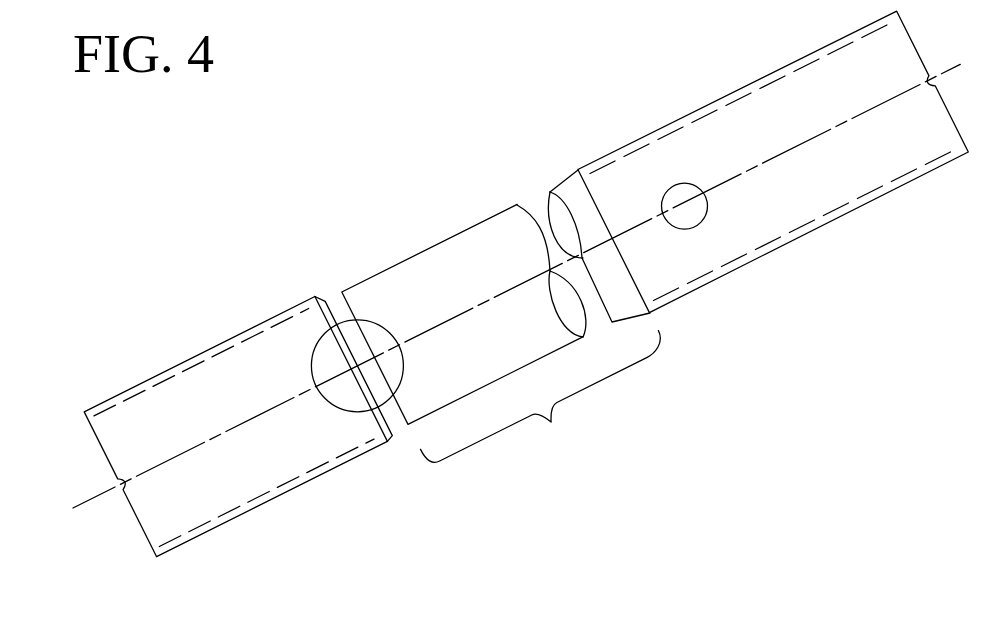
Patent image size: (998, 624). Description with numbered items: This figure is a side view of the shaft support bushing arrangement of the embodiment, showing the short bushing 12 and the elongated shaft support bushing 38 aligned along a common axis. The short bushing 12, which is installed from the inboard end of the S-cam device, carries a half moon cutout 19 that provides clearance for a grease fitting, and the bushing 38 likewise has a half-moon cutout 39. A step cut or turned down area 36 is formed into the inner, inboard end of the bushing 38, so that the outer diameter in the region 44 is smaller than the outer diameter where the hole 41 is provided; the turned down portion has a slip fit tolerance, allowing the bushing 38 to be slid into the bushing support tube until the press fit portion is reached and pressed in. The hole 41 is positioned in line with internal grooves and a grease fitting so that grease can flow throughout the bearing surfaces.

The short bushing 12 is at (167, 372).
The half moon cutout 19 is at (315, 348).
The half-moon cutout 39 is at (380, 328).
The step cut or turned down area 36 is at (552, 188).
The shaft support bushing 38 is at (798, 239).
The hole 41 is at (670, 190).
The region 44 is at (551, 422).